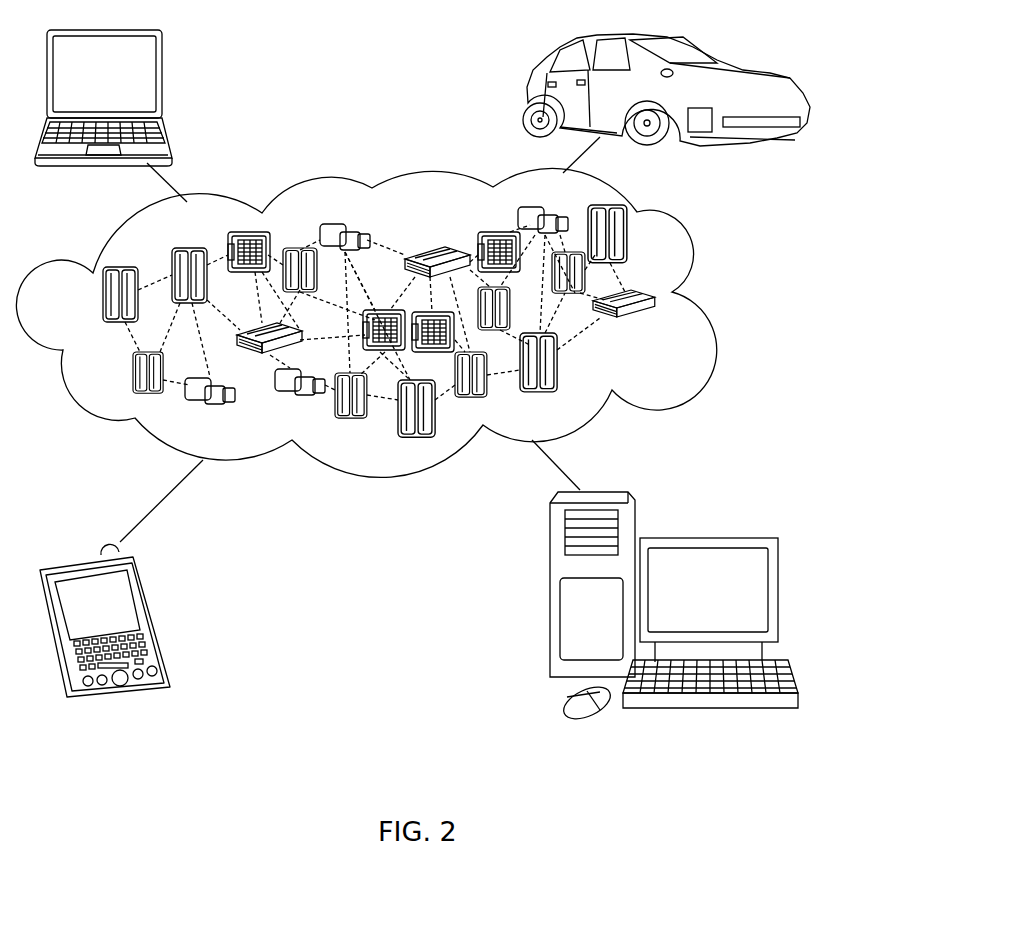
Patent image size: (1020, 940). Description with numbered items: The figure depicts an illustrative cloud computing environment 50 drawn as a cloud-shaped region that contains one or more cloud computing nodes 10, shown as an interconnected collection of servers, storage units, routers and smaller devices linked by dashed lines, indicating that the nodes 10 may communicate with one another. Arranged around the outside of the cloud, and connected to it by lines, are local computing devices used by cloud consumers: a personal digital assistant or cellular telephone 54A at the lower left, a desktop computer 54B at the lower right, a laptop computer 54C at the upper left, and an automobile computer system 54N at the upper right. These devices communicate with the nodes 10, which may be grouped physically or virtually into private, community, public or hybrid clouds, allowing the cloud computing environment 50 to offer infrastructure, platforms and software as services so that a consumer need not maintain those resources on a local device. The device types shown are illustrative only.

The cloud computing nodes 10 is at (422, 321).
The cloud computing environment 50 is at (707, 303).
The personal digital assistant or cellular telephone 54A is at (153, 617).
The desktop computer 54B is at (706, 537).
The laptop computer 54C is at (163, 82).
The automobile computer system 54N is at (525, 96).